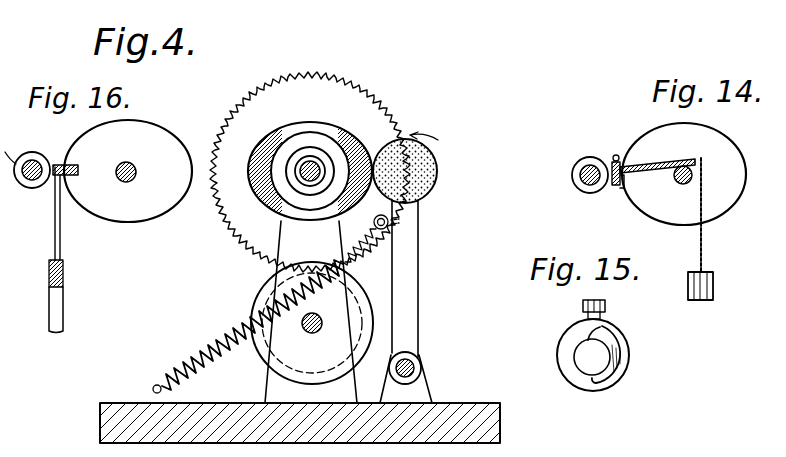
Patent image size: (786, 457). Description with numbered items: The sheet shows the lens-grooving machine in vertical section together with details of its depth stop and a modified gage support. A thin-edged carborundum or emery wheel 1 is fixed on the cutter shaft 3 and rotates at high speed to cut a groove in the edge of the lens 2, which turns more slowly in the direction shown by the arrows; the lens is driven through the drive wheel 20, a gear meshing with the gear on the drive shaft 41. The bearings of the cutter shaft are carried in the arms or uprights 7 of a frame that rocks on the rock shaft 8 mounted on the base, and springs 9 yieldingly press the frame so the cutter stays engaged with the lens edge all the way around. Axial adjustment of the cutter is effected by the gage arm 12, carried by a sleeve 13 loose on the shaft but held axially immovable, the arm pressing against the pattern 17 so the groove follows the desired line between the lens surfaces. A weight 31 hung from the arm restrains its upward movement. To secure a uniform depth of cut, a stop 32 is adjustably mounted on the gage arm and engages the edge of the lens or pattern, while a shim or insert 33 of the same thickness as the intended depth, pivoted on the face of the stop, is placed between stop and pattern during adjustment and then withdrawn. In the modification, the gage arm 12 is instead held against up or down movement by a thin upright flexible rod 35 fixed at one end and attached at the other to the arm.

In FIG. 4, the carborundum or emery wheel 1 is at (436, 168).
In FIG. 4, the lens 2 is at (265, 193).
In FIG. 14, the cutter shaft 3 is at (580, 158).
In FIG. 4, the arms or uprights 7 is at (414, 268).
In FIG. 4, the rock shaft 8 is at (418, 361).
In FIG. 4, the springs 9 is at (223, 328).
In FIG. 16, the gage arm 12 is at (75, 178).
In FIG. 14, the gage arm 12 is at (626, 165).
In FIG. 16, the sleeve 13 is at (30, 157).
In FIG. 16, the pattern 17 is at (162, 134).
In FIG. 14, the pattern 17 is at (684, 174).
In FIG. 4, the drive wheel 20 is at (327, 110).
In FIG. 14, the weight 31 is at (718, 229).
In FIG. 14, the stop 32 is at (613, 160).
In FIG. 15, the stop 32 is at (566, 330).
In FIG. 14, the shim or insert 33 is at (621, 191).
In FIG. 15, the shim or insert 33 is at (613, 326).
In FIG. 16, the flexible rod 35 is at (55, 234).
In FIG. 4, the drive shaft 41 is at (312, 323).